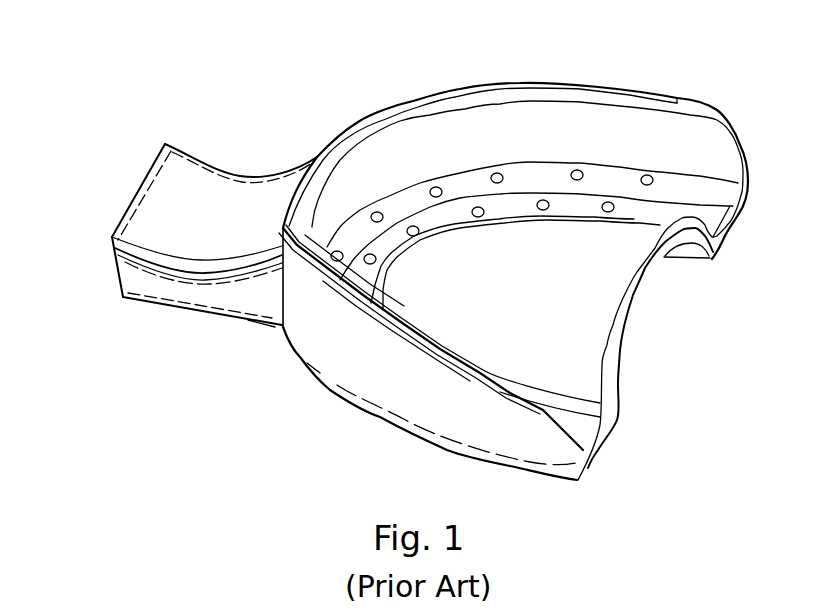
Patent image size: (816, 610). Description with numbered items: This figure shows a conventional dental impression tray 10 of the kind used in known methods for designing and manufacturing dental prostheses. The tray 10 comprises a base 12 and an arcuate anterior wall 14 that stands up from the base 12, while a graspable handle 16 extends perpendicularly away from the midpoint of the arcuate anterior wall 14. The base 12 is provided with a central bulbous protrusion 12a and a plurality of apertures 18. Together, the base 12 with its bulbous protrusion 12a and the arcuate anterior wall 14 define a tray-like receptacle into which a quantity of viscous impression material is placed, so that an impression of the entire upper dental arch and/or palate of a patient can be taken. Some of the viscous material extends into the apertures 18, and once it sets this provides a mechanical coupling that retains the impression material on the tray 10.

The dental impression tray 10 is at (336, 86).
The base 12 is at (658, 307).
The central bulbous protrusion 12a is at (595, 362).
The arcuate anterior wall 14 is at (615, 133).
The graspable handle 16 is at (128, 203).
The apertures 18 is at (577, 170).